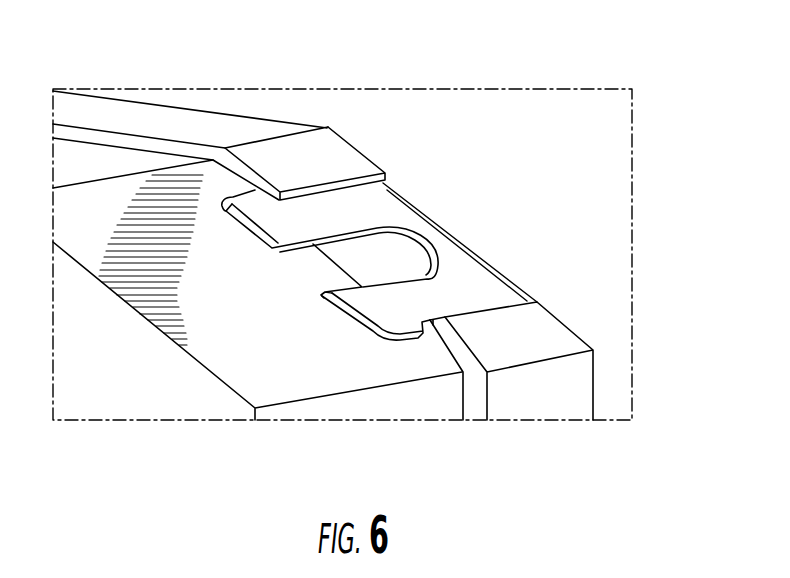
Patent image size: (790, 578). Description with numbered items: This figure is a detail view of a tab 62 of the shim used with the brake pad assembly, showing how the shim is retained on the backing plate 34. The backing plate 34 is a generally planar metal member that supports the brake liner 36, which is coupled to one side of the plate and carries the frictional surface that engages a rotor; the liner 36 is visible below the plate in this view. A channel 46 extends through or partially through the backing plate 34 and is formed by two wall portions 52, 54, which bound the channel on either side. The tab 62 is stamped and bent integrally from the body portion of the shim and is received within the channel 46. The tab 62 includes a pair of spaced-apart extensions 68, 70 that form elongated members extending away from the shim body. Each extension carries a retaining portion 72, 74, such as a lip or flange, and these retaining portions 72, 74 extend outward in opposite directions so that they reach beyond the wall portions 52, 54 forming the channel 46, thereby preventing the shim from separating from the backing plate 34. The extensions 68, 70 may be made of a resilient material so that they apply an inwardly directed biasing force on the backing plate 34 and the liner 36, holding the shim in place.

The backing plate 34 is at (537, 403).
The brake liner 36 is at (330, 410).
The channel 46 is at (364, 260).
The wall portion 52 is at (312, 188).
The wall portion 54 is at (482, 315).
The tab 62 is at (390, 205).
The extension 68 is at (337, 205).
The extension 70 is at (468, 293).
The retaining portion 72 is at (262, 207).
The retaining portion 74 is at (403, 323).